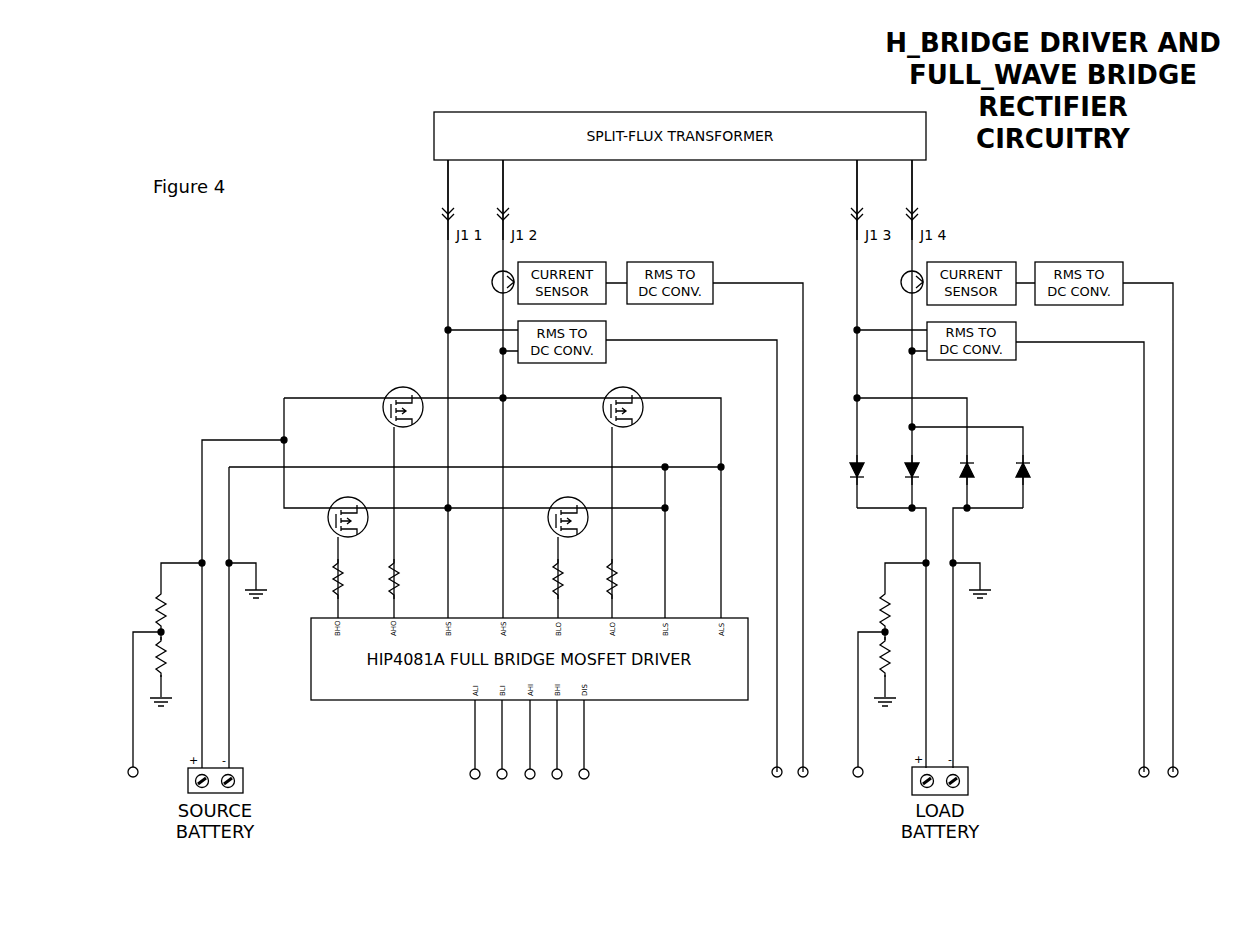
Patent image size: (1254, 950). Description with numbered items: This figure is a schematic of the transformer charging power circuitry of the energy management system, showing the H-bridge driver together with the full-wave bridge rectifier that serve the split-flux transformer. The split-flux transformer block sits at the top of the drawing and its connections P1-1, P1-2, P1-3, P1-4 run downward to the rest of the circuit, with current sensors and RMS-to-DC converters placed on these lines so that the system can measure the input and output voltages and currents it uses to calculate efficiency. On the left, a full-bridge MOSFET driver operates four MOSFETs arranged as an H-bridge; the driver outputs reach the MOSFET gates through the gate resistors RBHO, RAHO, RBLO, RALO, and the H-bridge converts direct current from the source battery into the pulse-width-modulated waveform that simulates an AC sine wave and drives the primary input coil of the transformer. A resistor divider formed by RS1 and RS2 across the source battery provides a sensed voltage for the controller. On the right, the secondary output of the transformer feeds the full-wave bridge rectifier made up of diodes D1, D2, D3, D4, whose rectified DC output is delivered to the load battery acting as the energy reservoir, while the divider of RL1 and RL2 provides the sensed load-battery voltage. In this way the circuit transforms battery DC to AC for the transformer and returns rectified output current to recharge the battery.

The transformer output pin P1-1 is at (464, 200).
The transformer output pin P1-2 is at (519, 200).
The transformer output pin P1-3 is at (873, 200).
The transformer output pin P1-4 is at (928, 200).
The rectifier diode D1 is at (867, 470).
The rectifier diode D2 is at (922, 470).
The rectifier diode D3 is at (977, 470).
The rectifier diode D4 is at (1033, 470).
The source battery sense resistor RS1 is at (172, 657).
The source battery sense resistor RS2 is at (172, 610).
The load battery sense resistor RL1 is at (896, 657).
The load battery sense resistor RL2 is at (896, 610).
The gate resistor RBHO is at (352, 579).
The gate resistor RAHO is at (408, 579).
The gate resistor RBLO is at (571, 579).
The gate resistor RALO is at (625, 579).